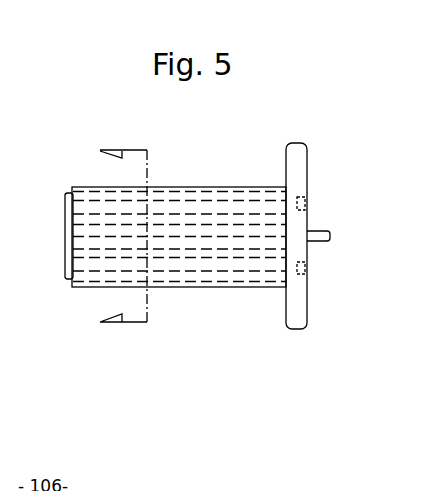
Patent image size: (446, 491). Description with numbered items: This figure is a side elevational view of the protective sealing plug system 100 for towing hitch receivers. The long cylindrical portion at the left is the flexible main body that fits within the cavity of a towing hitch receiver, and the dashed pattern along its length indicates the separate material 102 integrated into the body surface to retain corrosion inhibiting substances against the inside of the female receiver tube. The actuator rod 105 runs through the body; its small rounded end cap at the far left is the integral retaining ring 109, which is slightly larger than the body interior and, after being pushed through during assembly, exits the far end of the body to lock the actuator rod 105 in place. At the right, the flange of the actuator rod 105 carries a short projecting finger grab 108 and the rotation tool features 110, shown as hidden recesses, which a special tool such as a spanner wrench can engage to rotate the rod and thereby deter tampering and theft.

The protective sealing plug system 100 is at (239, 264).
The separate material 102 is at (178, 187).
The actuator rod 105 is at (308, 180).
The finger grabs 108 is at (336, 237).
The retaining ring 109 is at (62, 188).
The rotation tool features 110 is at (311, 271).